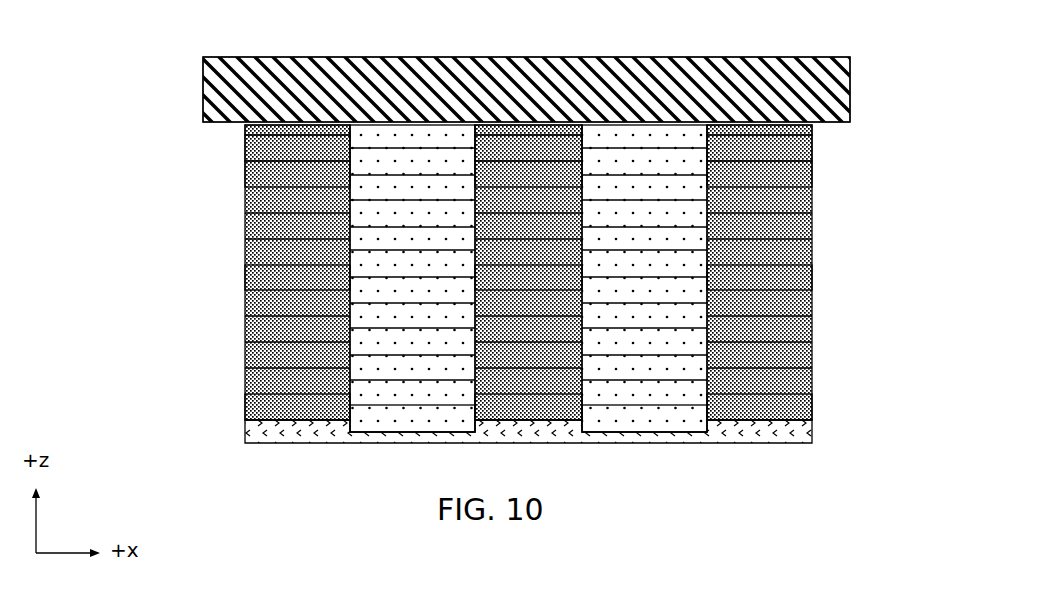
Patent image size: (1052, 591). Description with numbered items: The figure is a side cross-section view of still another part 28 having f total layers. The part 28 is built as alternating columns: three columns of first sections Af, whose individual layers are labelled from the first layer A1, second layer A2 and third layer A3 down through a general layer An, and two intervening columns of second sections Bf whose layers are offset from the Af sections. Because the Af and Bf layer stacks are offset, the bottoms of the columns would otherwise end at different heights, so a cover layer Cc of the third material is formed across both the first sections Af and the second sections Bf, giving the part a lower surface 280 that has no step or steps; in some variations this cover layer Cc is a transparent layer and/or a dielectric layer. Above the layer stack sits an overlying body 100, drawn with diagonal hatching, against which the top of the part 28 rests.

The top electrode / cap layer 100 is at (724, 52).
The layer stack 28 is at (489, 299).
The bottom common layer 280 is at (448, 452).
The first A layer A1 is at (234, 128).
The second A layer A2 is at (234, 146).
The third A layer A3 is at (234, 173).
The n-th A layer An is at (234, 300).
The cover layer Cc is at (234, 432).